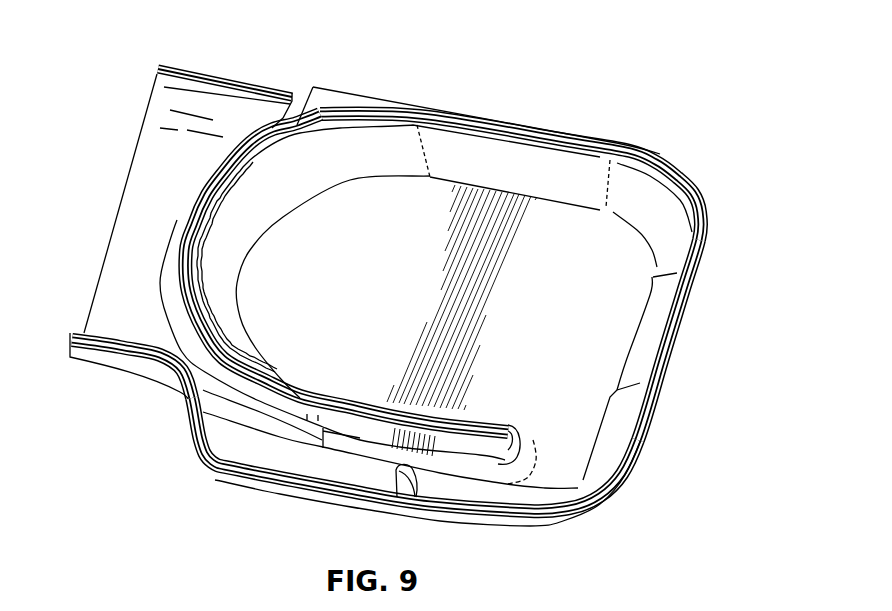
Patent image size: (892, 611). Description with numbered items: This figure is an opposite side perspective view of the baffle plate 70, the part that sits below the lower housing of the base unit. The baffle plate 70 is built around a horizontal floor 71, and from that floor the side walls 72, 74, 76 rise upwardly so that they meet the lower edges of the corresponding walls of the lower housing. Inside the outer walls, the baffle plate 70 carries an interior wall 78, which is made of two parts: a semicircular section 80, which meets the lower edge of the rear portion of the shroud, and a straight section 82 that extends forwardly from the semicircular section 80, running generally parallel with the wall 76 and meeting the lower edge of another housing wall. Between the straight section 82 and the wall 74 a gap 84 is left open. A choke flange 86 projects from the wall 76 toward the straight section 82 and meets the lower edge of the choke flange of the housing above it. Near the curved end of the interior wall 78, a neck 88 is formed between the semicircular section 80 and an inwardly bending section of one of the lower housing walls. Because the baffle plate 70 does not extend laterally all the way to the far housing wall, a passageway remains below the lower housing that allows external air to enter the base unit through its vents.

The baffle plate 70 is at (700, 450).
The horizontal floor 71 is at (610, 318).
The side wall 72 is at (525, 128).
The side wall 74 is at (663, 353).
The side wall 76 is at (300, 482).
The interior wall 78 is at (308, 235).
The semicircular section 80 is at (197, 193).
The straight section 82 is at (297, 395).
The gap 84 is at (600, 460).
The choke flange 86 is at (410, 495).
The neck 88 is at (200, 387).